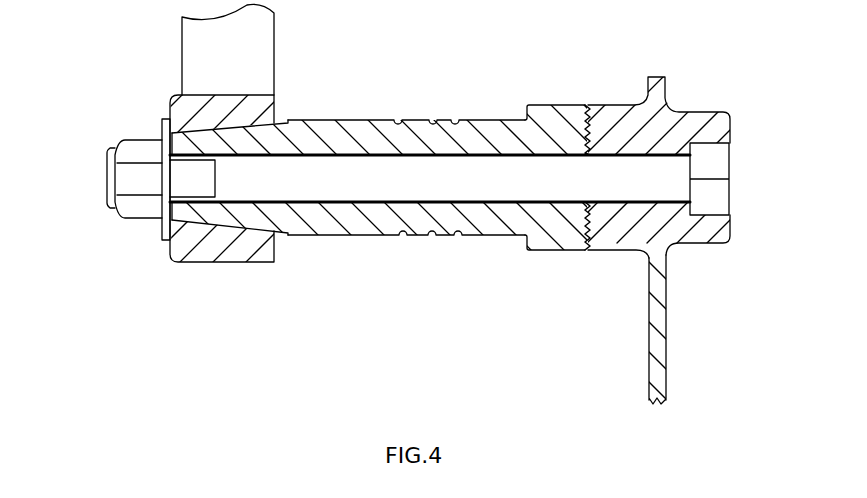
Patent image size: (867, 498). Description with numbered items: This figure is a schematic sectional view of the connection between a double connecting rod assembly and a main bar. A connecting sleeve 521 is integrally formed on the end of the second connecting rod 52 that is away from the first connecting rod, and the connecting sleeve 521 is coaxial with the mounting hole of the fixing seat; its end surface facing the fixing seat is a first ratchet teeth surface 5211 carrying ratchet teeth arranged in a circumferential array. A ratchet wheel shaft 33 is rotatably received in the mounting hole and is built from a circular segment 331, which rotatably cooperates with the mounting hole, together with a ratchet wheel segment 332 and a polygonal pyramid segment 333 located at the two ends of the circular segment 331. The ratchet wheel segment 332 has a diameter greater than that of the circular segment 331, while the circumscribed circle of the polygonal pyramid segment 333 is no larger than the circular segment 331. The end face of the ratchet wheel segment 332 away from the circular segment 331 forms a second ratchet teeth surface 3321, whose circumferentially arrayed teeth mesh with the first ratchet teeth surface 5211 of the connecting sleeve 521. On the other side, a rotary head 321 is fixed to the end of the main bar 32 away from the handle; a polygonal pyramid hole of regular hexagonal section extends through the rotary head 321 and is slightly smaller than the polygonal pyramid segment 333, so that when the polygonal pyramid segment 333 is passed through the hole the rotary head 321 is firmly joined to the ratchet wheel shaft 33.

The main bar 32 is at (220, 50).
The rotary head 321 is at (200, 250).
The ratchet wheel shaft 33 is at (376, 170).
The circular segment 331 is at (365, 225).
The ratchet wheel segment 332 is at (513, 170).
The second ratchet teeth surface 3321 is at (586, 112).
The polygonal pyramid segment 333 is at (228, 216).
The second connecting rod 52 is at (660, 362).
The connecting sleeve 521 is at (652, 167).
The first ratchet teeth surface 5211 is at (732, 69).